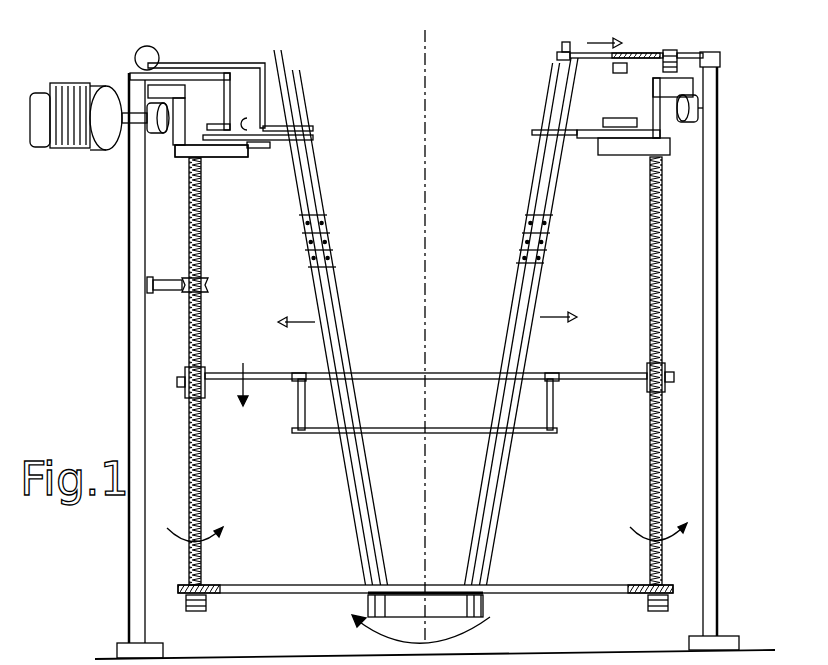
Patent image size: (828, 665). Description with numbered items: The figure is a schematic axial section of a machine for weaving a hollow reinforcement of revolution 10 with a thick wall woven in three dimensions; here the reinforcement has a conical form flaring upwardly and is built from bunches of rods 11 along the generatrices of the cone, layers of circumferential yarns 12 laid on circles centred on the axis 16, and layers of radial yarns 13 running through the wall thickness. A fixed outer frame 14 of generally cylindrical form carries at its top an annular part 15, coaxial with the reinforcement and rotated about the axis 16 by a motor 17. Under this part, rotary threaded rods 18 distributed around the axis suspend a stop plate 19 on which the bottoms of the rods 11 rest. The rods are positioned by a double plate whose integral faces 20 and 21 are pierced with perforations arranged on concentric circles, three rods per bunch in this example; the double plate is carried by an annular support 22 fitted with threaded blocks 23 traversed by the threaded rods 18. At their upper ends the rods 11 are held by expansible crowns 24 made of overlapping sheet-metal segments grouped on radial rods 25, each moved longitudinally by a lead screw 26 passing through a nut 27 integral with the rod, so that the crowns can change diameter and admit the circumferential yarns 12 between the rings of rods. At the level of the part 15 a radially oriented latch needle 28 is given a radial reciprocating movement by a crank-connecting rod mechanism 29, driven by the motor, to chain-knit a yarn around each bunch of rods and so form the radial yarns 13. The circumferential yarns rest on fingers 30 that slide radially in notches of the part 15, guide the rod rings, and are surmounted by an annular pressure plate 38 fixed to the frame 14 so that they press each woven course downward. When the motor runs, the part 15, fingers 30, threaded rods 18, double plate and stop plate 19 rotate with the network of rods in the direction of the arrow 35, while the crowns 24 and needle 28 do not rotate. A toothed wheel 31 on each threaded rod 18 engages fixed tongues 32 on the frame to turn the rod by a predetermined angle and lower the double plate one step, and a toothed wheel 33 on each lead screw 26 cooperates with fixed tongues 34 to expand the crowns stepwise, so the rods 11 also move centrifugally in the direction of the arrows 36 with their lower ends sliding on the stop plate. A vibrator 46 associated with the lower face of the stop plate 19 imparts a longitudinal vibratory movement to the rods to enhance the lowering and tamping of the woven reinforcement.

The hollow reinforcement of revolution 10 is at (409, 317).
The rods 11 is at (333, 318).
The circumferential yarns 12 is at (328, 243).
The radial yarns 13 is at (306, 230).
The outer frame 14 is at (122, 295).
The annular part 15 is at (213, 160).
The axis 16 is at (428, 108).
The motor 17 is at (70, 152).
The threaded rods 18 is at (203, 462).
The stop plate 19 is at (255, 586).
The upper face of double plate 20 is at (443, 373).
The lower face of double plate 21 is at (516, 432).
The annular support 22 is at (578, 381).
The threaded blocks 23 is at (202, 370).
The crowns 24 is at (296, 63).
The radial rods 25 is at (577, 59).
The lead screws 26 is at (592, 102).
The nut 27 is at (597, 96).
The latch needle 28 is at (313, 128).
The crank-connecting rod mechanism 29 is at (172, 55).
The fingers 30 is at (316, 138).
The toothed wheel 31 is at (207, 282).
The fixed tongues 32 is at (163, 293).
The toothed wheel 33 is at (675, 52).
The fixed tongues 34 is at (675, 77).
The arrow 35 is at (490, 620).
The arrows 36 is at (427, 334).
The annular pressure plate 38 is at (248, 152).
The vibrator 46 is at (484, 604).